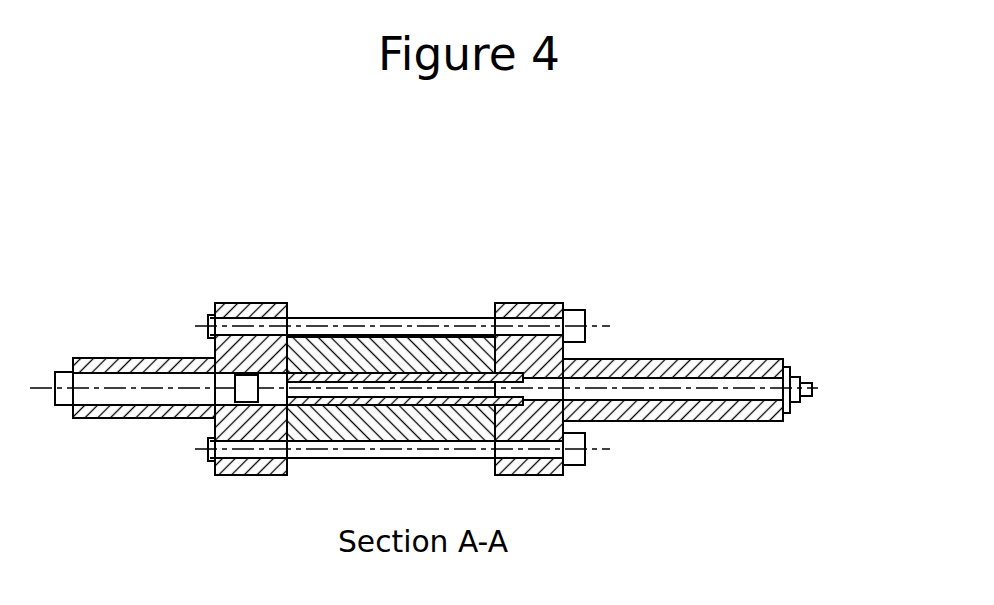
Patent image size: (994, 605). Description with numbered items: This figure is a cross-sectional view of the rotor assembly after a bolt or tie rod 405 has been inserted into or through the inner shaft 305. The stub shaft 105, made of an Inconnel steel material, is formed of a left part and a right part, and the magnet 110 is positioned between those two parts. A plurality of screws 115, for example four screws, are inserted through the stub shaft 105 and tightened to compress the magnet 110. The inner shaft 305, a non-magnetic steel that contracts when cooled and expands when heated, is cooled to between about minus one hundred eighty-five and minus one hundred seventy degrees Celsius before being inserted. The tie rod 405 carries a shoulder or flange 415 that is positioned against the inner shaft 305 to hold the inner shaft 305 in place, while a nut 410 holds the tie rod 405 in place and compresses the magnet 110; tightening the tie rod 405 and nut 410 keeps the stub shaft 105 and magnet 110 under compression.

The stub shaft 105 is at (268, 252).
The magnet 110 is at (352, 287).
The screws 115 is at (615, 280).
The inner shaft 305 is at (437, 322).
The tie rod 405 is at (80, 320).
The nut 410 is at (818, 322).
The flange 415 is at (222, 450).